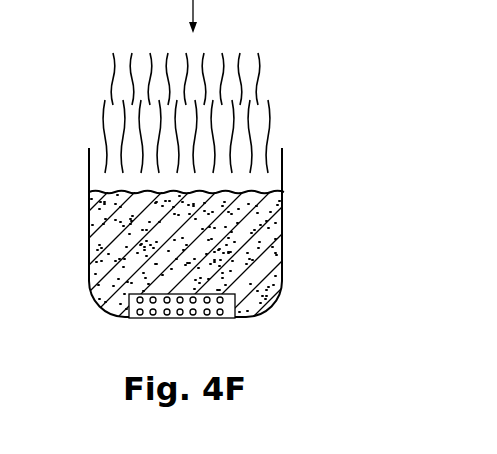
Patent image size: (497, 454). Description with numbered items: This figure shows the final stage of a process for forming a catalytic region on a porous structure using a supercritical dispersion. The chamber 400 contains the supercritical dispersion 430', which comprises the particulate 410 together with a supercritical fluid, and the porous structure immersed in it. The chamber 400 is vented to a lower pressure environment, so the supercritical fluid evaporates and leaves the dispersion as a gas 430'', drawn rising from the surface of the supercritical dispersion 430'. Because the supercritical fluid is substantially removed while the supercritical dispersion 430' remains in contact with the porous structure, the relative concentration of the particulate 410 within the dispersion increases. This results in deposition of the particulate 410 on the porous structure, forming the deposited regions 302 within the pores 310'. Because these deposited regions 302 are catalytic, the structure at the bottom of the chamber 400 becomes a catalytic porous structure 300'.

The chamber 400 is at (82, 168).
The particulate 410 is at (125, 243).
The gas 430'' is at (154, 113).
The supercritical dispersion 430' is at (78, 300).
The catalytic porous structure 300' is at (172, 323).
The pores 310' is at (180, 326).
The deposited regions 302 is at (207, 314).